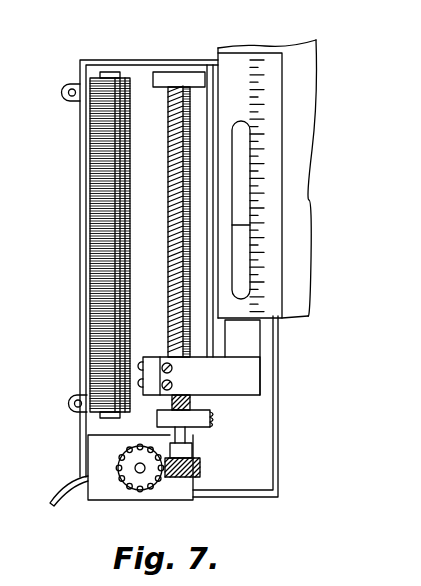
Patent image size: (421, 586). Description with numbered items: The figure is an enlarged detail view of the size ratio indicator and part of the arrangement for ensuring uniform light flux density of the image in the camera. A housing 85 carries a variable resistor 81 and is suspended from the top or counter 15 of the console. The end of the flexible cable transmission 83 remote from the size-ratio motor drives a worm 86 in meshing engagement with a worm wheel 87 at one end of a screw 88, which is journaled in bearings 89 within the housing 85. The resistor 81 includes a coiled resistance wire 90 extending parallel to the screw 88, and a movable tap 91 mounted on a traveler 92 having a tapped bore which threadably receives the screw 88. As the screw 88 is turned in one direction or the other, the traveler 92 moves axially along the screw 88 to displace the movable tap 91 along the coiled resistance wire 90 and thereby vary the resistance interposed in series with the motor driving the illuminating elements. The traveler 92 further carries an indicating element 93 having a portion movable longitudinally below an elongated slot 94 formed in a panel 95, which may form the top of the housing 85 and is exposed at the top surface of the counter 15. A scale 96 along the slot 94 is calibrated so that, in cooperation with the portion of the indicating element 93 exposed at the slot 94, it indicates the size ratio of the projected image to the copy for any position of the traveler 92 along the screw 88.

The counter 15 is at (305, 147).
The variable resistor 81 is at (90, 266).
The flexible cable transmission 83 is at (67, 497).
The housing 85 is at (257, 477).
The worm 86 is at (145, 480).
The worm wheel 87 is at (187, 480).
The screw 88 is at (172, 284).
The bearings 89 is at (189, 72).
The coiled resistance wire 90 is at (90, 173).
The movable tap 91 is at (86, 375).
The traveler 92 is at (153, 357).
The indicating element 93 is at (250, 357).
The elongated slot 94 is at (247, 124).
The panel 95 is at (293, 98).
The scale 96 is at (262, 193).